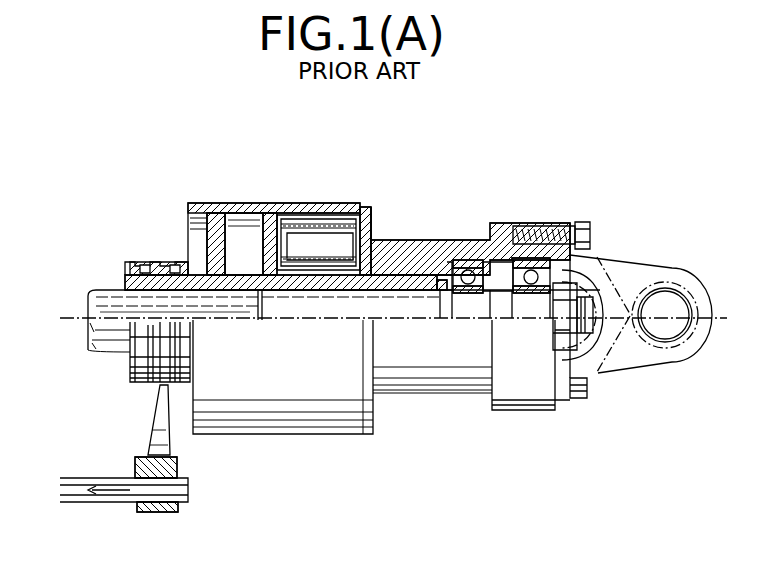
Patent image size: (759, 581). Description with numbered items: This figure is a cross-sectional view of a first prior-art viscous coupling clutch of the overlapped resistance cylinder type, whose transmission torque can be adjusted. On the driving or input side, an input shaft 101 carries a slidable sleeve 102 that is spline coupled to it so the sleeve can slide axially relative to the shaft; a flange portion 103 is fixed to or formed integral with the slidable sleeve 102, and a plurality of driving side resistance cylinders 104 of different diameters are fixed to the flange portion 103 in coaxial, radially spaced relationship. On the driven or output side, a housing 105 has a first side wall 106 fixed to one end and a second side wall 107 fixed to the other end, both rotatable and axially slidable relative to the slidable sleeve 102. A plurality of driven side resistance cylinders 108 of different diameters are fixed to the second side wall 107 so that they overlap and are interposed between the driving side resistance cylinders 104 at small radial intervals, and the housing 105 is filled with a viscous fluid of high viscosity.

The input shaft 101 is at (102, 290).
The slidable sleeve 102 is at (397, 278).
The flange portion 103 is at (262, 215).
The driving side resistance cylinders 104 is at (283, 214).
The housing 105 is at (237, 204).
The first side wall 106 is at (207, 203).
The second side wall 107 is at (372, 231).
The driven side resistance cylinders 108 is at (340, 208).